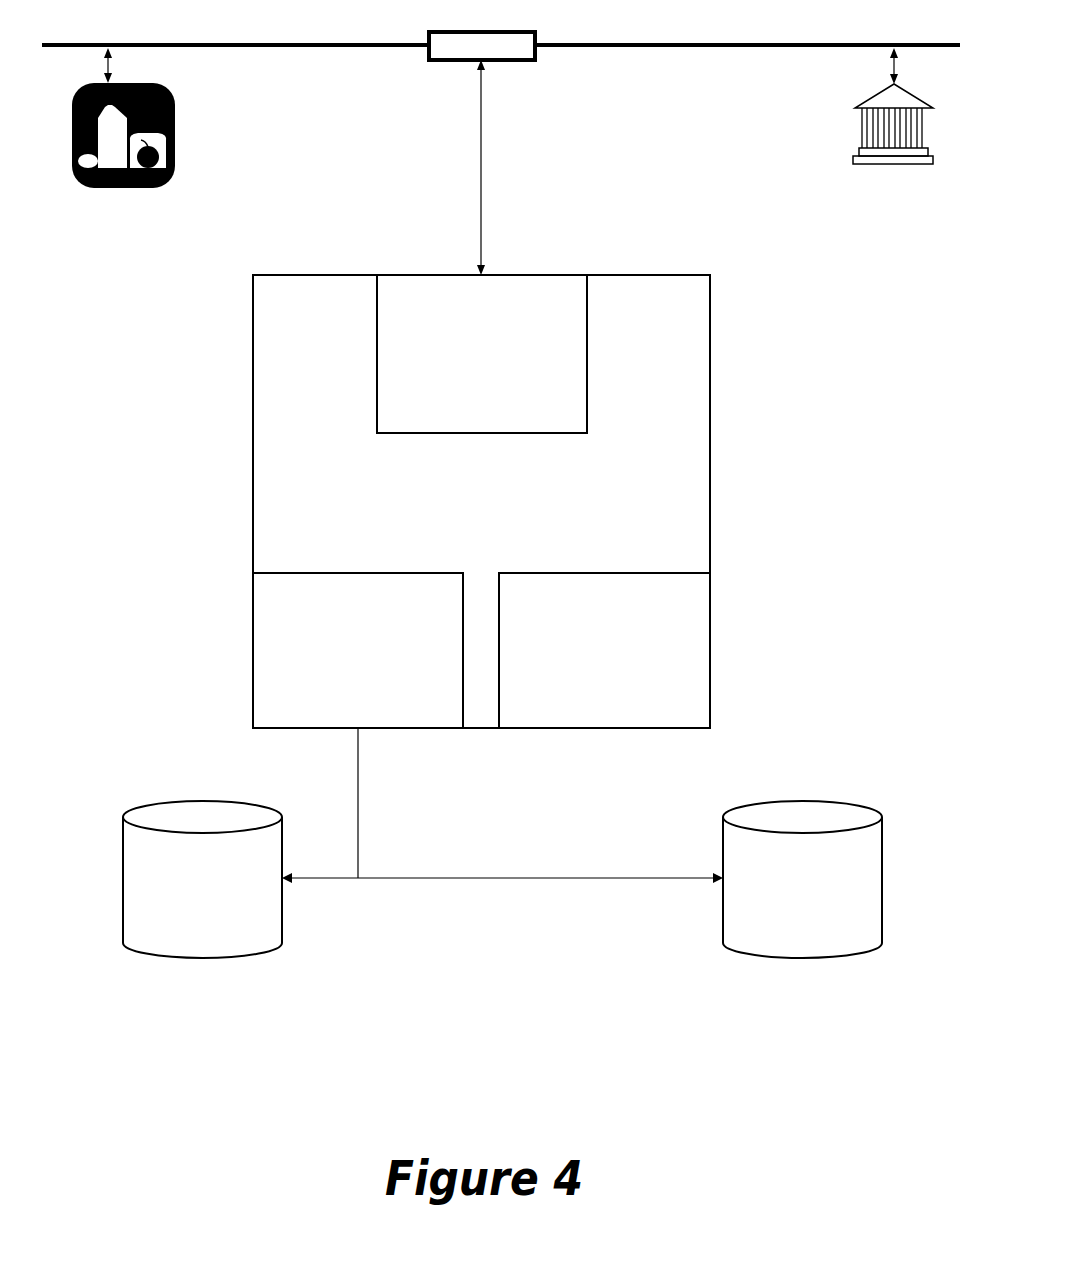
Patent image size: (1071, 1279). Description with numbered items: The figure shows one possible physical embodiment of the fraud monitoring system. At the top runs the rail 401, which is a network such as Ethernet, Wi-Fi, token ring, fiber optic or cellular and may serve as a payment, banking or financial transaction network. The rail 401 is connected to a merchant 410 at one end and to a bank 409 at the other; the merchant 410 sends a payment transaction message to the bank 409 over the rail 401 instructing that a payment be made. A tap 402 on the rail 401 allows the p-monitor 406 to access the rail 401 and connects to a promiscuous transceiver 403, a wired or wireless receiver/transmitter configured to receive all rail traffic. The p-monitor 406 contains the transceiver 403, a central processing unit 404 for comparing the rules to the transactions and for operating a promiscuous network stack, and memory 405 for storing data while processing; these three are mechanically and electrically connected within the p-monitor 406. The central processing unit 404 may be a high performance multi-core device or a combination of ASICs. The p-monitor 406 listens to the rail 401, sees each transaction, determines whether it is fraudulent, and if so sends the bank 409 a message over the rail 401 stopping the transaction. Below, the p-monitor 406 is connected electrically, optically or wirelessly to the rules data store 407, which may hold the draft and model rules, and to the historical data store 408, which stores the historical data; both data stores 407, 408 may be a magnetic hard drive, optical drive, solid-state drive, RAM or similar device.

The rail 401 is at (501, 30).
The tap 402 is at (482, 142).
The promiscuous transceiver 403 is at (459, 348).
The central processing unit 404 is at (342, 661).
The memory 405 is at (587, 661).
The p-monitor 406 is at (465, 511).
The rules data store 407 is at (186, 888).
The historical data store 408 is at (787, 888).
The bank 409 is at (893, 127).
The merchant 410 is at (123, 134).